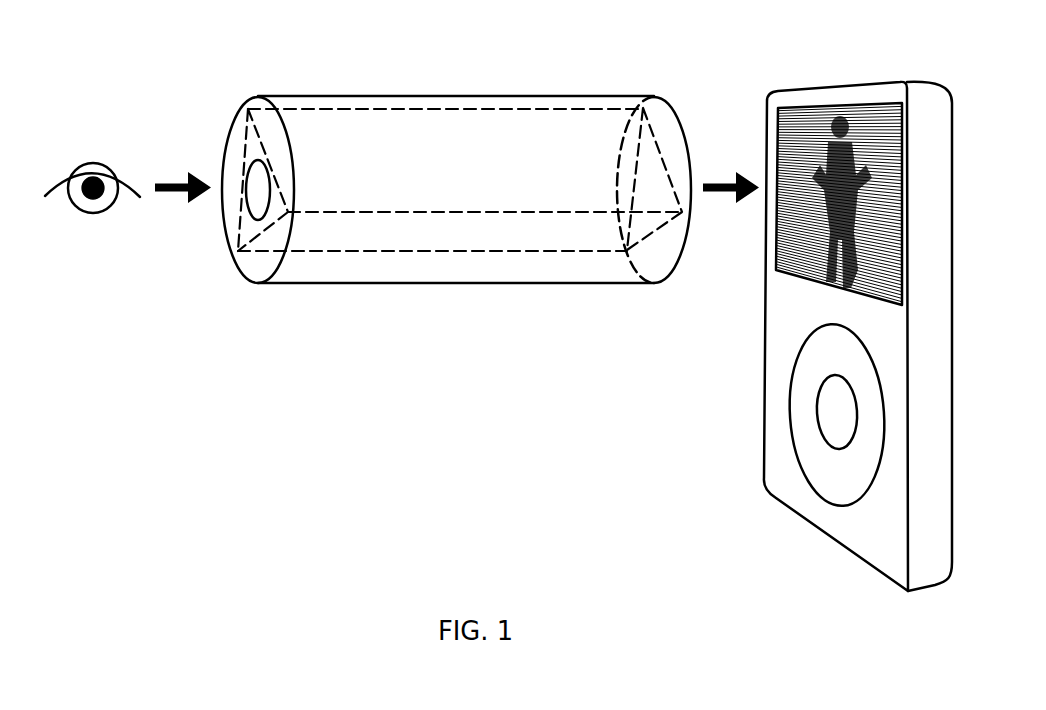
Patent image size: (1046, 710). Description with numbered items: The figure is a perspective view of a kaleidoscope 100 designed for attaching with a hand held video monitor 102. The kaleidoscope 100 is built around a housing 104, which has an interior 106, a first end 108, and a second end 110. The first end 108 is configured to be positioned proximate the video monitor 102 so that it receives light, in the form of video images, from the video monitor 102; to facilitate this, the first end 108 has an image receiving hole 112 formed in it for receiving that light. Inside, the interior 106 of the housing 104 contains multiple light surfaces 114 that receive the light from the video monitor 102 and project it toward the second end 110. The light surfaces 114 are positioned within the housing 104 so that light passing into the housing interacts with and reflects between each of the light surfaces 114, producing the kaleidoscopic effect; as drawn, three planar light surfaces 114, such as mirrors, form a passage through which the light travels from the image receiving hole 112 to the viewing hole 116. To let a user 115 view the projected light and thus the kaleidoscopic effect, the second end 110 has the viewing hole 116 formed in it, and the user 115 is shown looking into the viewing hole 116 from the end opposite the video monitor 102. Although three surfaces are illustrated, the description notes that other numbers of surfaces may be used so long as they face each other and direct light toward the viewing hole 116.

The kaleidoscope 100 is at (429, 177).
The video monitor 102 is at (802, 145).
The housing 104 is at (365, 283).
The interior 106 is at (577, 160).
The first end 108 is at (663, 137).
The second end 110 is at (237, 167).
The image receiving hole 112 is at (652, 172).
The light surfaces 114 is at (473, 251).
The user 115 is at (113, 172).
The viewing hole 116 is at (257, 197).